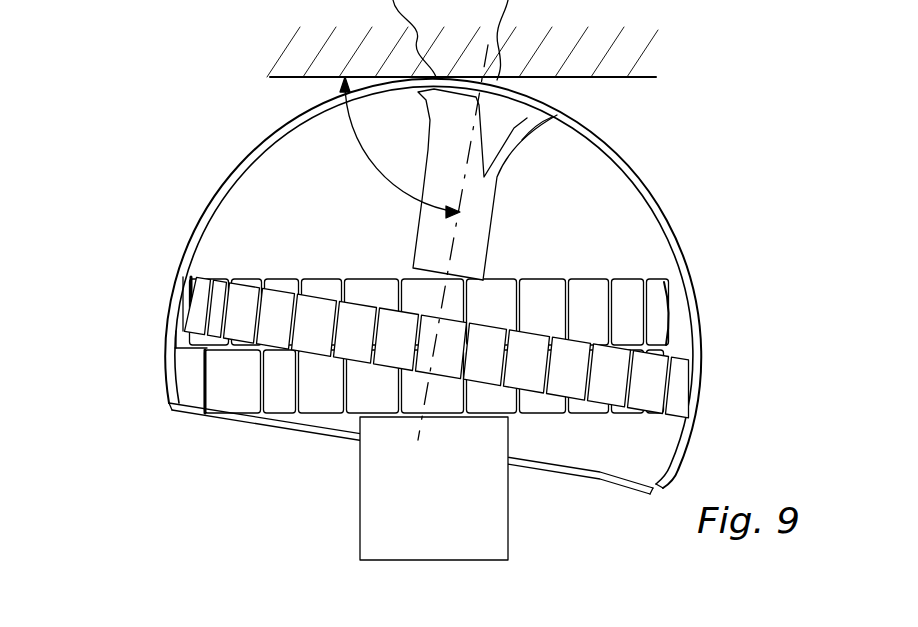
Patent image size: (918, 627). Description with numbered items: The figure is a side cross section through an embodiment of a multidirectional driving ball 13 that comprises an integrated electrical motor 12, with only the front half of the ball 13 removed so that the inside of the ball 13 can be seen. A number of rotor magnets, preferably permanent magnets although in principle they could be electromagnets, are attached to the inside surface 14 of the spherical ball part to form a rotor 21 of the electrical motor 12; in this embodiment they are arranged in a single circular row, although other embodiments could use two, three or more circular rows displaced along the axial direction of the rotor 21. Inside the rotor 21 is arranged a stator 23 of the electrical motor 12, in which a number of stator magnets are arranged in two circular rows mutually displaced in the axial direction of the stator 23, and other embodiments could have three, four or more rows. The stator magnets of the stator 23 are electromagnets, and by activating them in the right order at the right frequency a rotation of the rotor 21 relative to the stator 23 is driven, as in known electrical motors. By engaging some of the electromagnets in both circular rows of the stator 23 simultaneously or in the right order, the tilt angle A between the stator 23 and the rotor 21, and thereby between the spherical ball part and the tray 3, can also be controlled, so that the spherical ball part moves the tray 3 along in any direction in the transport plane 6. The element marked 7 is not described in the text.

The tray 3 is at (638, 77).
The transport plane 6 is at (531, 104).
The inside surface 14 is at (226, 198).
The base plate 7 is at (203, 476).
The multidirectional driving ball 13 is at (286, 493).
The electrical motor 12 is at (176, 363).
The stator 23 is at (632, 313).
The rotor 21 is at (673, 388).
The tilt angle A is at (400, 147).